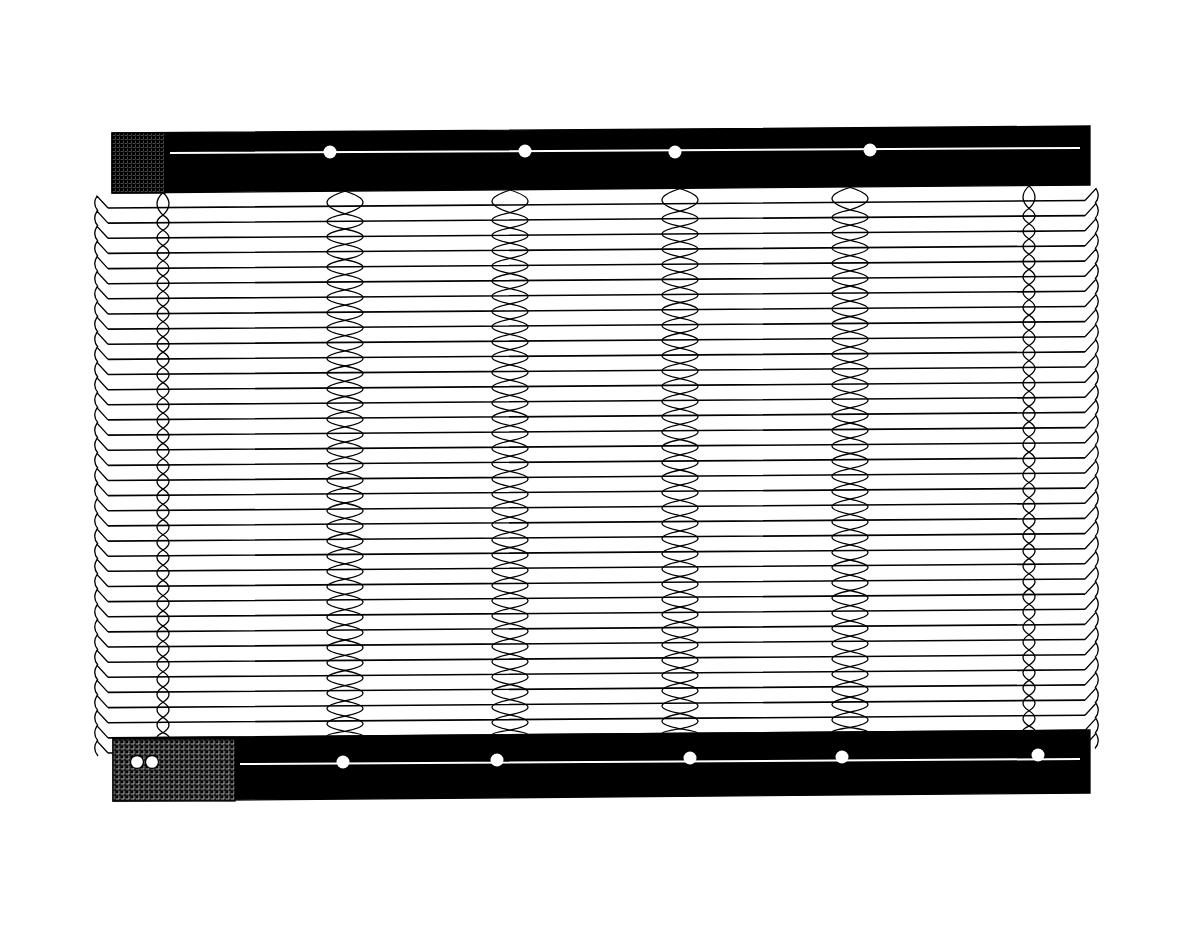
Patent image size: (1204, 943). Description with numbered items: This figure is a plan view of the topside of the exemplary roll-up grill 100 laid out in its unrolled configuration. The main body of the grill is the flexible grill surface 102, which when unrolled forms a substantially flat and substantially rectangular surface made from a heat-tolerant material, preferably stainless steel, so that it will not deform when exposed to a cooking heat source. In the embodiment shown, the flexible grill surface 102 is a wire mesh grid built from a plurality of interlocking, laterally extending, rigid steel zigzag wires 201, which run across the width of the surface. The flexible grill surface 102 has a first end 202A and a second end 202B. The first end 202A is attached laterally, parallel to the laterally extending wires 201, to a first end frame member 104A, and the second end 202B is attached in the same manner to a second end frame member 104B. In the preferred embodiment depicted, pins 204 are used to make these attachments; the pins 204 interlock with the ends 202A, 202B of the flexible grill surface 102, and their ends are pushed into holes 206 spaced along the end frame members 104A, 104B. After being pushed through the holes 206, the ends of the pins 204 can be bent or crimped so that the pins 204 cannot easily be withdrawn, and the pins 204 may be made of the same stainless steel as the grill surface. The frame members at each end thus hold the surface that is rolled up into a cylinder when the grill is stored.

The roll-up grill 100 is at (1154, 139).
The flexible grill surface 102 is at (1100, 368).
The first end frame member 104A is at (187, 132).
The second end frame member 104B is at (203, 802).
The zigzag wires 201 is at (1095, 412).
The first end 202A is at (567, 143).
The second end 202B is at (777, 763).
The pins 204 is at (413, 150).
The holes 206 is at (330, 148).